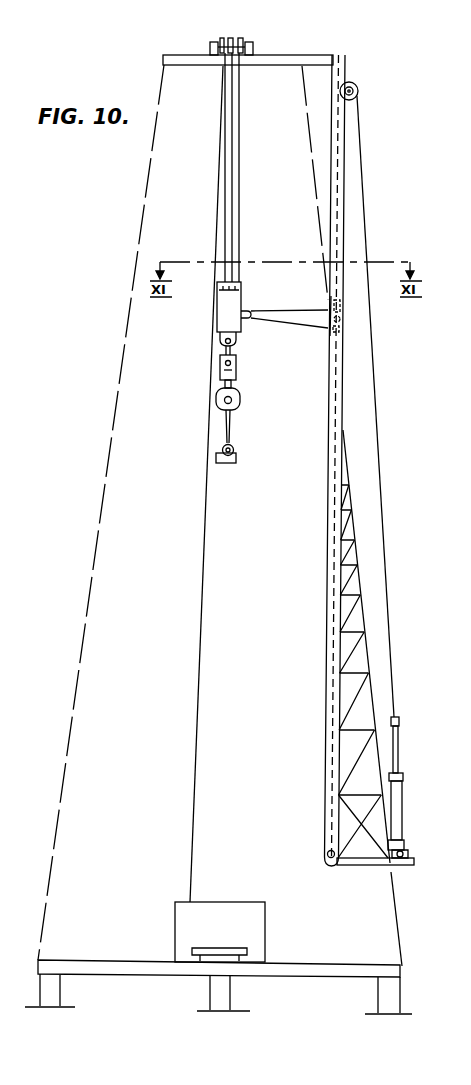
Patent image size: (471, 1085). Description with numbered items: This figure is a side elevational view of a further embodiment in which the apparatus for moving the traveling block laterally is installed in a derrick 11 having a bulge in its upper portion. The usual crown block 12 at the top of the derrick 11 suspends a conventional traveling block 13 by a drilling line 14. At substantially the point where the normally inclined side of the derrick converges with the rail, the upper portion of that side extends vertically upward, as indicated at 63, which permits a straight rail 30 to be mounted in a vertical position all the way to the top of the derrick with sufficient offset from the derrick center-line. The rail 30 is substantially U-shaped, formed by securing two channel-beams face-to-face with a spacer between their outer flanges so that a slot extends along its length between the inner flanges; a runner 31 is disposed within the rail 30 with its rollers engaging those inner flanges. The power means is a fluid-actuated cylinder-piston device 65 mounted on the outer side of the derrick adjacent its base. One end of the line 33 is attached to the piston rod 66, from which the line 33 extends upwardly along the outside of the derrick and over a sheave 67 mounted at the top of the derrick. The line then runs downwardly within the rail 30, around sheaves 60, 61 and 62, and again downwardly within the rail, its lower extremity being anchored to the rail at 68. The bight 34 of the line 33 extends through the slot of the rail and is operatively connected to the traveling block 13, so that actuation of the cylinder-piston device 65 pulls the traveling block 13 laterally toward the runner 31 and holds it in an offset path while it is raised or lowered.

The derrick 11 is at (355, 576).
The crown block 12 is at (238, 42).
The traveling block 13 is at (222, 310).
The drilling line 14 is at (226, 163).
The guide member (rail) 30 is at (326, 614).
The runner member 31 is at (346, 320).
The flexible cable (line) 33 is at (378, 448).
The bight portion 34 is at (290, 323).
The sheave 60 is at (336, 305).
The sheave 61 is at (331, 336).
The sheave 62 is at (249, 313).
The vertically extending upper side portion of derrick 63 is at (330, 400).
The fluid-actuated cylinder-piston device 65 is at (402, 813).
The piston rod 66 is at (398, 756).
The sheave 67 is at (357, 86).
The anchor point 68 is at (328, 854).